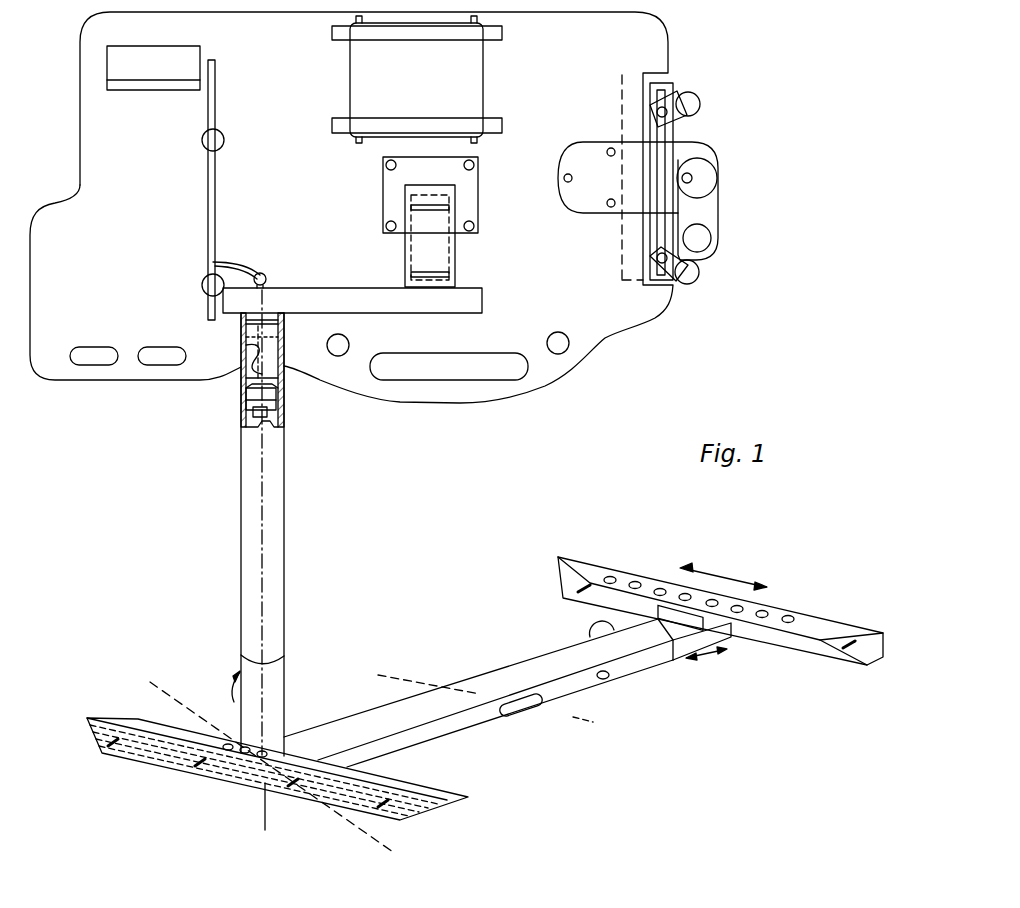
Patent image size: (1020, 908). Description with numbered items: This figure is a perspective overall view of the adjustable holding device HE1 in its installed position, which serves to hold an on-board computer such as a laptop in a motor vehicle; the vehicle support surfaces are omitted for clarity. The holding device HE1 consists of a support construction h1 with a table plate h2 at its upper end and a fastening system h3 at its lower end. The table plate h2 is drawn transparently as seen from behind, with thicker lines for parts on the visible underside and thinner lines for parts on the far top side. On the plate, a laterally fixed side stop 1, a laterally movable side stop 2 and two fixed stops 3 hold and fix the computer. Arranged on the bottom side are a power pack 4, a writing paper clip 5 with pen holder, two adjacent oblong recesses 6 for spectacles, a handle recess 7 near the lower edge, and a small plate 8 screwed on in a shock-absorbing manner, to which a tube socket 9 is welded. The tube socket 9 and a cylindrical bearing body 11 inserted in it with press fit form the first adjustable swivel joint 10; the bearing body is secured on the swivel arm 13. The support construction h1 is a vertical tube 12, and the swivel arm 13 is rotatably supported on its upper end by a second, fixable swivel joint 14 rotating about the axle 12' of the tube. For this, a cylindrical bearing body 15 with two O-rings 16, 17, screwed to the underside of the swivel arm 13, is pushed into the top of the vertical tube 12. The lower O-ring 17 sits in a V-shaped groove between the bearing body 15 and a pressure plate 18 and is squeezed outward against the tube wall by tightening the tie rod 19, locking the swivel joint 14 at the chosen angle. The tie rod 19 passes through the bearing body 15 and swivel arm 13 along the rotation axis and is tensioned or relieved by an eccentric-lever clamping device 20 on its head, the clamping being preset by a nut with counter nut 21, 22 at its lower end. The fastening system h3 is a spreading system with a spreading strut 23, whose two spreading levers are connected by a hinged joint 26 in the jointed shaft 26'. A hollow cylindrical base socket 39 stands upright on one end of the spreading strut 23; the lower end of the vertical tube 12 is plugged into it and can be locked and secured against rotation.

The side stop 1 is at (205, 146).
The side stop 2 is at (696, 126).
The fixed stops 3 is at (555, 355).
The power pack 4 is at (468, 72).
The writing paper clip 5 is at (180, 50).
The oblong recesses 6 is at (157, 347).
The handle recess 7 is at (447, 381).
The small plate 8 is at (472, 190).
The tube socket 9 is at (426, 251).
The first adjustable swivel joint 10 is at (410, 258).
The cylindrical bearing body 11 is at (440, 265).
The vertical tube 12 is at (251, 560).
The axle of the vertical tube 12' is at (225, 619).
The swivel arm 13 is at (300, 288).
The second fixable swivel joint 14 is at (241, 372).
The cylindrical bearing body 15 is at (284, 325).
The O-ring 16 is at (246, 323).
The O-ring 17 is at (242, 403).
The pressure plate 18 is at (244, 412).
The tie rod 19 is at (240, 340).
The eccentric-lever clamping device 20 is at (266, 270).
The nut 21 is at (354, 469).
The counter nut 22 is at (284, 410).
The spreading strut 23 is at (507, 675).
The hinged joint 26 is at (510, 647).
The jointed shaft 26' is at (429, 670).
The base socket 39 is at (278, 690).
The support construction h1 is at (285, 540).
The table plate h2 is at (665, 312).
The fastening system h3 is at (371, 652).
The holding device HE1 is at (350, 400).